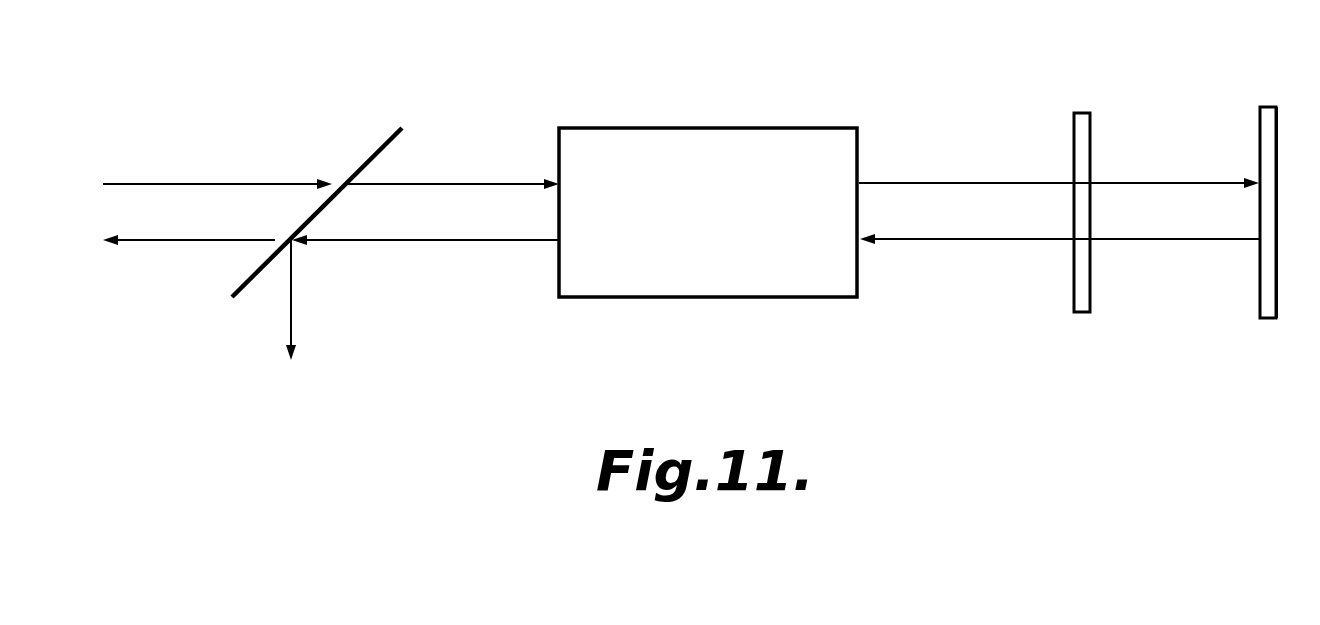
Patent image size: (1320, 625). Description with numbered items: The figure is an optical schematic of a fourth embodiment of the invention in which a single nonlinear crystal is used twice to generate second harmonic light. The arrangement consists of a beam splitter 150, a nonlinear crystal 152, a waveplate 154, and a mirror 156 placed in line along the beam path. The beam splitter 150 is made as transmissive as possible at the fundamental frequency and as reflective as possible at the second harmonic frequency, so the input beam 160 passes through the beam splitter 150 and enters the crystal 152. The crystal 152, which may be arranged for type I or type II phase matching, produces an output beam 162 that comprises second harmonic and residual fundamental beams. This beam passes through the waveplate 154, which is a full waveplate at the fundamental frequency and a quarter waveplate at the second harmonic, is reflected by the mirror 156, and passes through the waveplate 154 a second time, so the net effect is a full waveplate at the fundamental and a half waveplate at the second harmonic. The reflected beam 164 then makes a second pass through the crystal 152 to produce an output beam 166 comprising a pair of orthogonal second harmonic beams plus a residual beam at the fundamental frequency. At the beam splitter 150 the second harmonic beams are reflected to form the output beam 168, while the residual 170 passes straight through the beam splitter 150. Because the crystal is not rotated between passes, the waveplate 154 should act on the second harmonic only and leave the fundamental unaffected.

The beam splitter 150 is at (381, 146).
The nonlinear crystal 152 is at (712, 127).
The waveplate 154 is at (1081, 112).
The mirror 156 is at (1270, 106).
The input beam 160 is at (148, 183).
The output beam 162 is at (970, 182).
The reflected beam 164 is at (967, 243).
The output beam 166 is at (477, 243).
The output beam 168 is at (290, 314).
The residual 170 is at (148, 243).